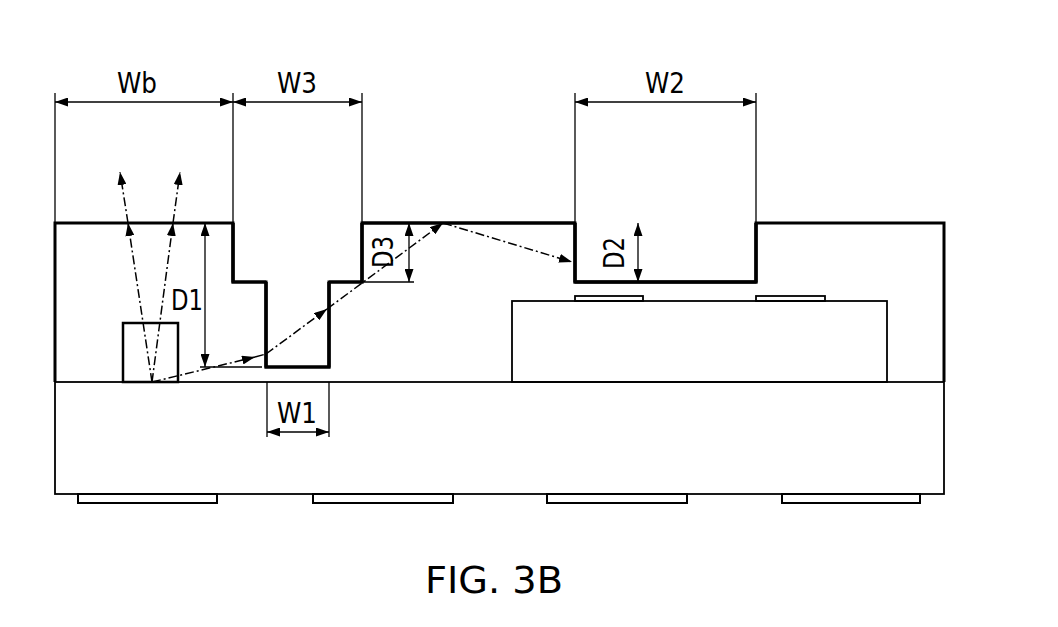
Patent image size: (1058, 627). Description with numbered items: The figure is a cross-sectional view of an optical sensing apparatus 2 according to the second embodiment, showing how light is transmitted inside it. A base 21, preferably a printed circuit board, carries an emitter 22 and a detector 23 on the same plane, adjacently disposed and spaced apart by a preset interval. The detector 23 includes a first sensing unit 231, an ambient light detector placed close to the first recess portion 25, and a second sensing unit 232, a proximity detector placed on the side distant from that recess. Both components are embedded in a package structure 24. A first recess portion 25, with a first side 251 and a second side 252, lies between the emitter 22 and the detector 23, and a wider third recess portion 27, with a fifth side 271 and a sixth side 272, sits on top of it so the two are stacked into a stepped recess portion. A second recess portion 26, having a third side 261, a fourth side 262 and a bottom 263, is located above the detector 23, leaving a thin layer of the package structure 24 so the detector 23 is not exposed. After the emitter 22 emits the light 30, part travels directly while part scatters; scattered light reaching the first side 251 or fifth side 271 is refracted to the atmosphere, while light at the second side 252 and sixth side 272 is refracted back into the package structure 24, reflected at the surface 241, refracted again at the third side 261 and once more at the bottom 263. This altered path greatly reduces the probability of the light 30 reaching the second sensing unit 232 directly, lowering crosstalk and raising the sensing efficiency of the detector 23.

The optical sensing apparatus 2 is at (458, 183).
The base 21 is at (743, 468).
The emitter 22 is at (130, 350).
The detector 23 is at (523, 343).
The first sensing unit 231 is at (607, 300).
The second sensing unit 232 is at (791, 297).
The package structure 24 is at (903, 243).
The surface of the package structure 241 is at (523, 222).
The first recess portion 25 is at (308, 345).
The first side 251 is at (270, 322).
The second side 252 is at (328, 292).
The second recess portion 26 is at (668, 232).
The third side 261 is at (578, 236).
The fourth side 262 is at (752, 237).
The bottom of the second recess portion 263 is at (693, 280).
The third recess portion 27 is at (285, 247).
The fifth side 271 is at (240, 250).
The sixth side 272 is at (358, 248).
The light 30 is at (125, 208).